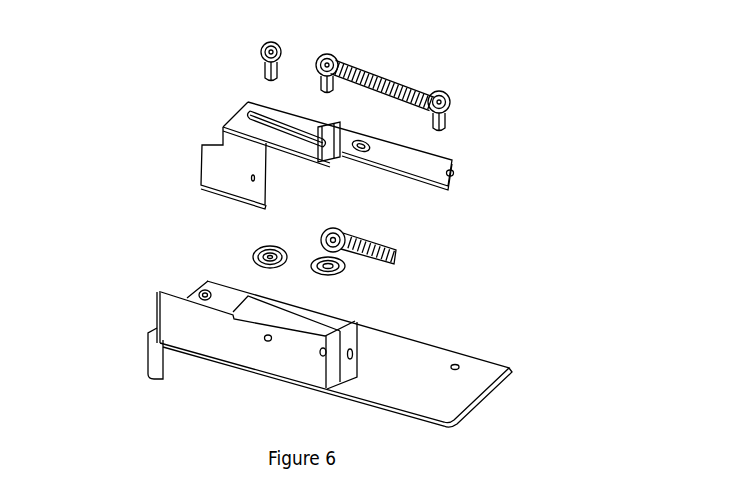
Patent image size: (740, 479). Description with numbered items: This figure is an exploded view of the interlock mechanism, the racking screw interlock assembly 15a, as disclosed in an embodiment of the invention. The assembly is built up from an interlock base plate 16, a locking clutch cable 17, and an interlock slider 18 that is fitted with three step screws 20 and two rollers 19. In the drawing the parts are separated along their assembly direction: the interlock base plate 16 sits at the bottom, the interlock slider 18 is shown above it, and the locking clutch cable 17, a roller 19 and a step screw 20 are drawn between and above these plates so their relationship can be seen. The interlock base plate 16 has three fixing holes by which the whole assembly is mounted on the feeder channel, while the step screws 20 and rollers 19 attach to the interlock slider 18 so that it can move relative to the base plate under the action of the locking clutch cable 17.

The racking screw interlock assembly 15a is at (127, 145).
The interlock base plate 16 is at (490, 365).
The locking clutch cable 17 is at (332, 239).
The interlock slider 18 is at (469, 165).
The roller 19 is at (249, 248).
The step screw 20 is at (264, 62).